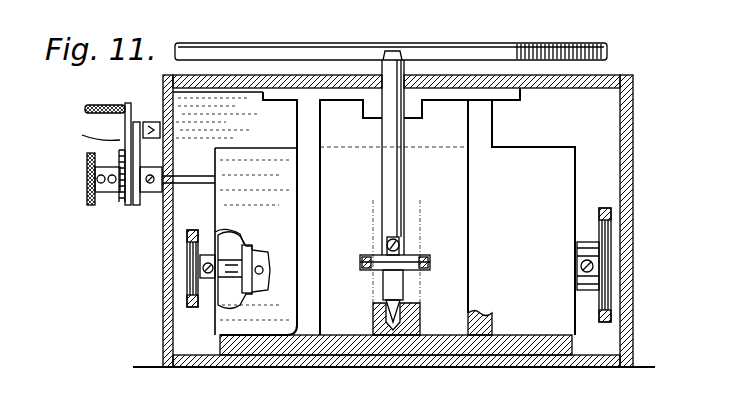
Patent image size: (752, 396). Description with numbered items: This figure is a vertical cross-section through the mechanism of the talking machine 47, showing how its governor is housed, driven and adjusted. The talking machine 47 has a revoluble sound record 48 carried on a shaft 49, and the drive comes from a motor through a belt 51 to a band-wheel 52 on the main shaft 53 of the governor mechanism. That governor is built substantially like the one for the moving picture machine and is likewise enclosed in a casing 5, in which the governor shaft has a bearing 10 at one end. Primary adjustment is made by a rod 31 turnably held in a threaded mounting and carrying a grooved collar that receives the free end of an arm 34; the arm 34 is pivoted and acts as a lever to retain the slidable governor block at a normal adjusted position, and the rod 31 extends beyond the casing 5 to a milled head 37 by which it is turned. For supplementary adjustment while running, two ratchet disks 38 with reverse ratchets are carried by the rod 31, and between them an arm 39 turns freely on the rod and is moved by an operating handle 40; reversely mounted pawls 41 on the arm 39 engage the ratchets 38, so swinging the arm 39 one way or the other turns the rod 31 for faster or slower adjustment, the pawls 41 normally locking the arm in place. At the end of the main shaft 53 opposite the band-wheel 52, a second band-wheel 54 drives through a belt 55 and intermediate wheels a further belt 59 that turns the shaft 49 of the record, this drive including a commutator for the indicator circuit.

The casing 5 is at (526, 243).
The bearing 10 is at (215, 295).
The rod 31 is at (191, 176).
The arm 34 is at (255, 296).
The milled head 37 is at (87, 158).
The ratchet disks 38 is at (136, 206).
The arm 39 is at (136, 115).
The operating handle 40 is at (94, 105).
The pawls 41 is at (240, 128).
The talking machine 47 is at (633, 75).
The sound record 48 is at (487, 43).
The shaft 49 is at (404, 234).
The belt 51 is at (608, 210).
The band-wheel 52 is at (612, 240).
The main shaft 53 is at (200, 250).
The band-wheel 54 is at (195, 290).
The belt 55 is at (192, 230).
The belt 59 is at (428, 268).